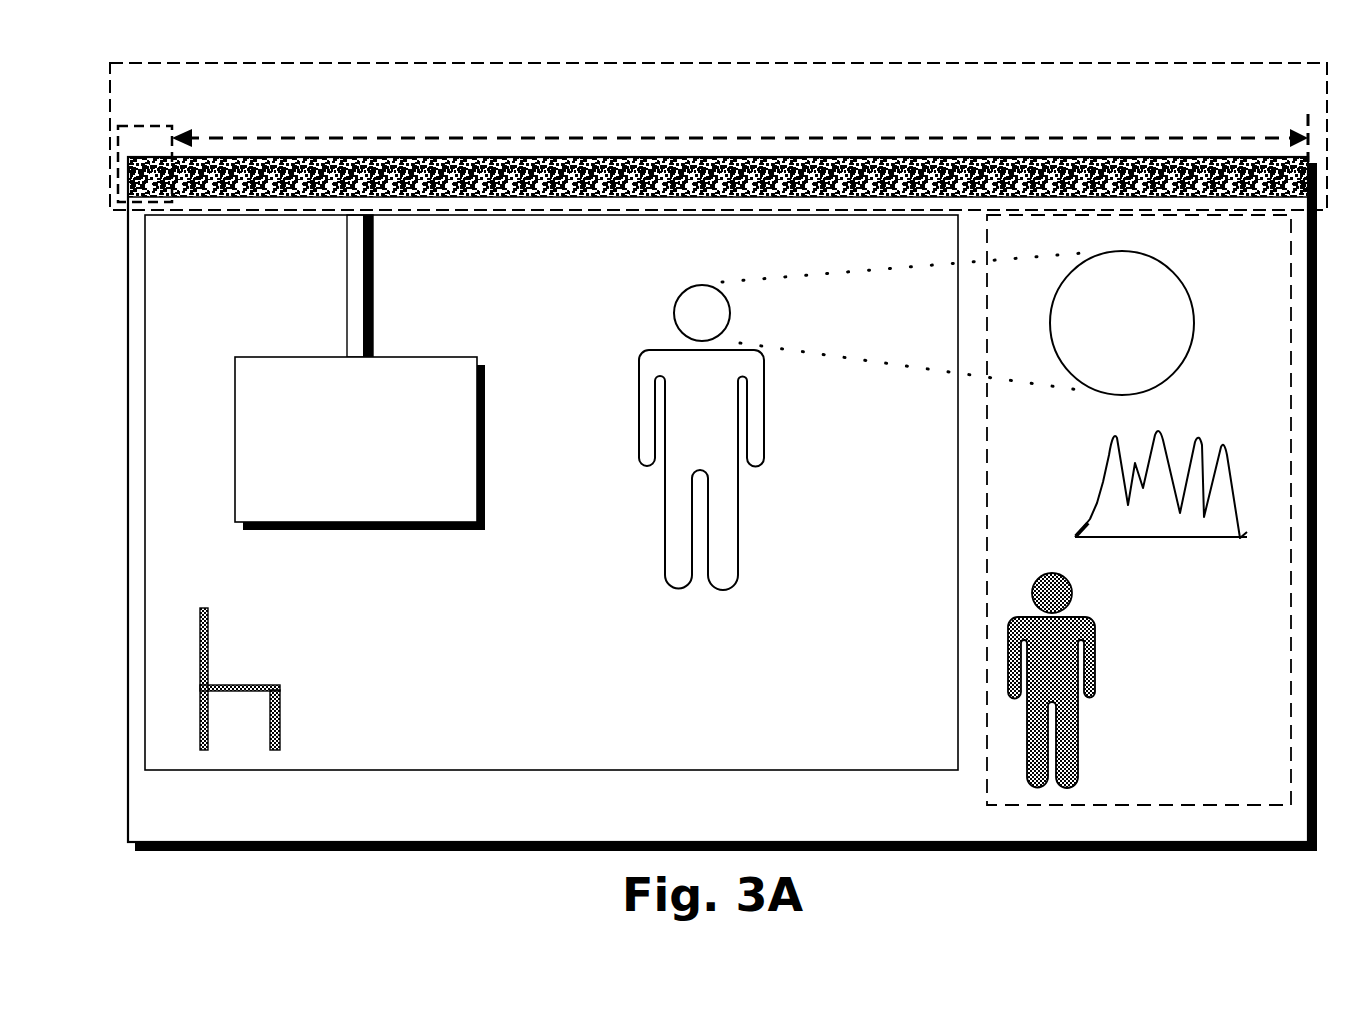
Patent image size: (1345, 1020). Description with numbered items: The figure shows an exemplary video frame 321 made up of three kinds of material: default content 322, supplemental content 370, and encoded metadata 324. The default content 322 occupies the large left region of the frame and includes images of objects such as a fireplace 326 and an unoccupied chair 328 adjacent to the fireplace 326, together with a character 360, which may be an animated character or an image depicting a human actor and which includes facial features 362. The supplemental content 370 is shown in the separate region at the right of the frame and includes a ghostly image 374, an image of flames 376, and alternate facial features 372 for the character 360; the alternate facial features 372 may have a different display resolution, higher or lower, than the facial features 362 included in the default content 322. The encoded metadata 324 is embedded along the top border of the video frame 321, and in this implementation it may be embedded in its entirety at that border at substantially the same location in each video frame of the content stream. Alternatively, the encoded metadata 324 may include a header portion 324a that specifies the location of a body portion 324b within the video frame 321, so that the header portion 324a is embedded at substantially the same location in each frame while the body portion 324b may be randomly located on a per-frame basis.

The video frame 321 is at (1262, 48).
The default content 322 is at (817, 735).
The encoded metadata 324 is at (539, 62).
The header portion 324a is at (160, 125).
The body portion 324b is at (788, 134).
The fireplace 326 is at (455, 357).
The unoccupied chair 328 is at (258, 684).
The character 360 is at (639, 412).
The facial features 362 is at (673, 306).
The supplemental content 370 is at (1182, 761).
The alternate facial features 372 is at (1143, 333).
The ghostly image 374 is at (1096, 648).
The image of flames 376 is at (1170, 540).